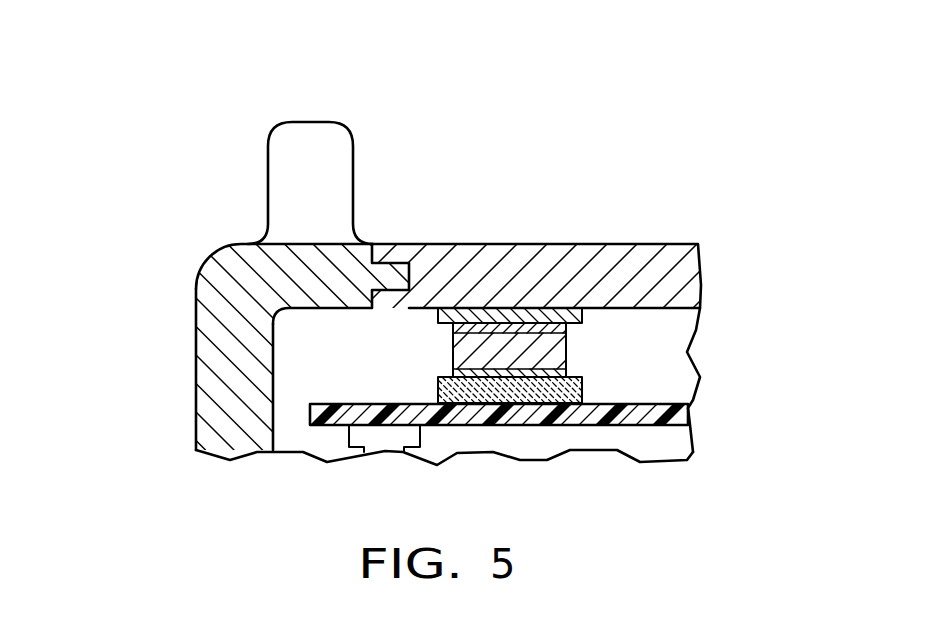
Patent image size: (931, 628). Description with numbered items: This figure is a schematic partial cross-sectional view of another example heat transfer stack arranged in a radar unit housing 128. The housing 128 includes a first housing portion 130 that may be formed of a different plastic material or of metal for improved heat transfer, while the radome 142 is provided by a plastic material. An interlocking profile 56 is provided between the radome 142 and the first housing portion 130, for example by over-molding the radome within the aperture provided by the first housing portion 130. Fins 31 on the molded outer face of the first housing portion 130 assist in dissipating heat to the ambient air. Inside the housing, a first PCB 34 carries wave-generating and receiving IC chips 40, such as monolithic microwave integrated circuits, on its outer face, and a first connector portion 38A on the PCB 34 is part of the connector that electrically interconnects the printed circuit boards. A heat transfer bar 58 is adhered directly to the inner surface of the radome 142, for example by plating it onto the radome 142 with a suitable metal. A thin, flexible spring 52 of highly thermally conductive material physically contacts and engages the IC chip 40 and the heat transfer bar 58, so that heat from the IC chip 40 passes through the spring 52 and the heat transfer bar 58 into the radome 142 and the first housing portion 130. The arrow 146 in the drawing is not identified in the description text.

The fins 31 is at (303, 137).
The housing 128 is at (205, 264).
The first housing portion 130 is at (202, 398).
The radome 142 is at (662, 260).
The interlocking profile 56 is at (416, 265).
The heat transfer bar 58 is at (493, 316).
The spring 52 is at (562, 352).
The IC chip 40 is at (448, 386).
The cavity 146 is at (594, 357).
The first PCB 34 is at (645, 418).
The first connector portion 38A is at (410, 432).